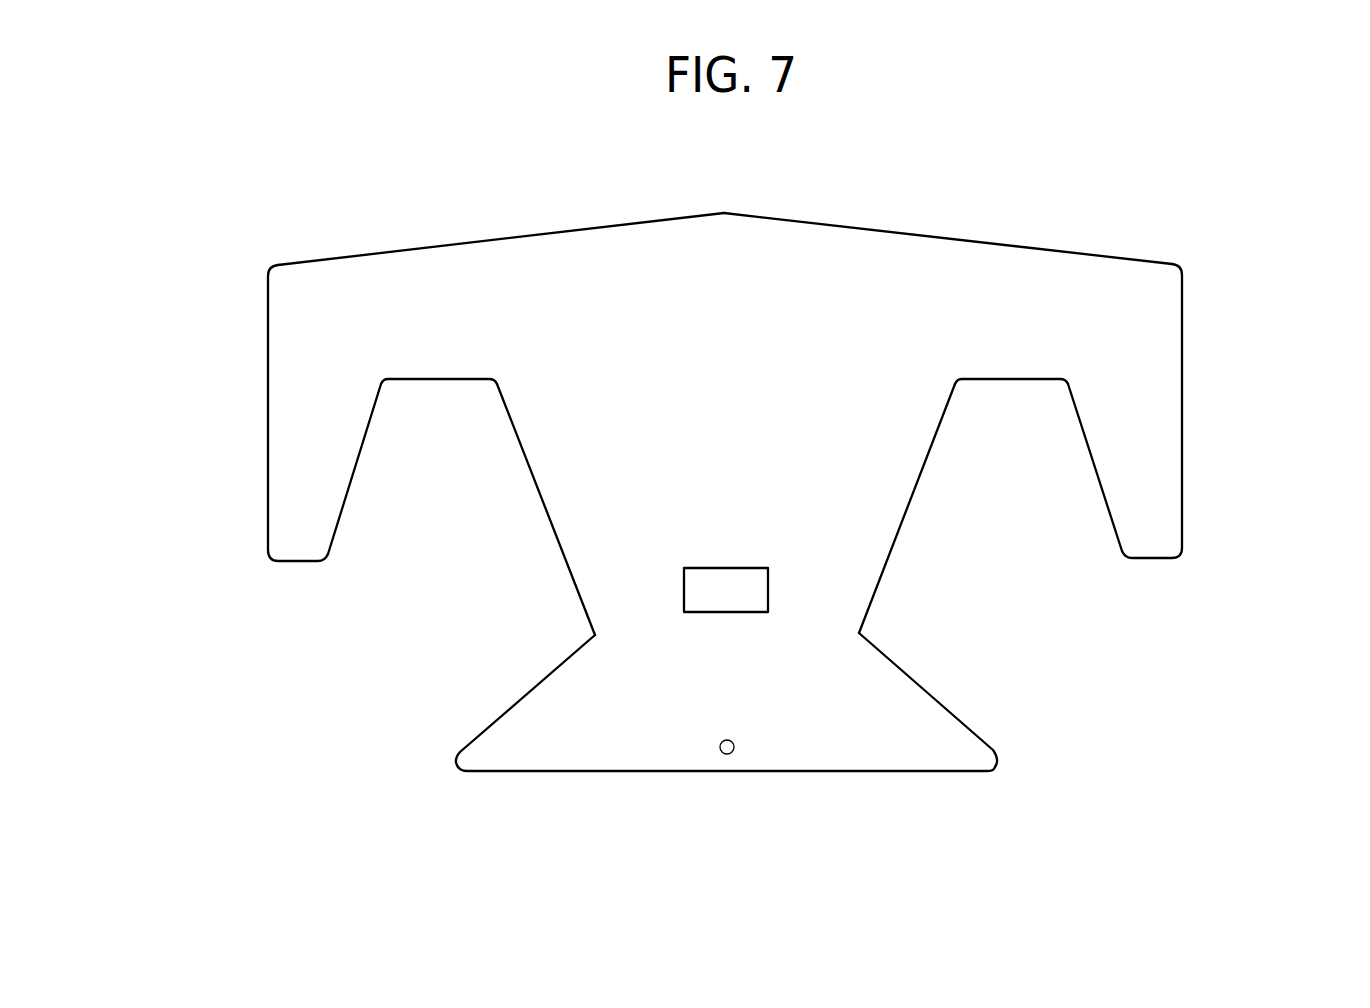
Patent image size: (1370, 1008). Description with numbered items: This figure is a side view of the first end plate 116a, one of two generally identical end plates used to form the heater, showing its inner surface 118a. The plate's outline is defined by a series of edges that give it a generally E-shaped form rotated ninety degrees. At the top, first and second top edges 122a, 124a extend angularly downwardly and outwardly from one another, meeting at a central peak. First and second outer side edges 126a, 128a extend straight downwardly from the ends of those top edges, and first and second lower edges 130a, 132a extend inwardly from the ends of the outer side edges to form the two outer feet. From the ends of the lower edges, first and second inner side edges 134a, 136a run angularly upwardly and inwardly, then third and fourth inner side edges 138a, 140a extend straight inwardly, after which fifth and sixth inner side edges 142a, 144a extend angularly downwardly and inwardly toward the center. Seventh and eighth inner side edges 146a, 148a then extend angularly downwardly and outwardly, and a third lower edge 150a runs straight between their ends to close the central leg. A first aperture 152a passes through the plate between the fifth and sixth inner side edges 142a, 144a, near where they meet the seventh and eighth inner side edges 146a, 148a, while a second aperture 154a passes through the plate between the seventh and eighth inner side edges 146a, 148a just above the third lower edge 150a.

The first end plate 116a is at (862, 189).
The inner surface 118a is at (756, 407).
The first top edge 122a is at (441, 250).
The second top edge 124a is at (990, 242).
The first outer side edge 126a is at (268, 400).
The second outer side edge 128a is at (1186, 354).
The first lower edge 130a is at (298, 563).
The second lower edge 132a is at (1156, 560).
The first inner side edge 134a is at (357, 492).
The second inner side edge 136a is at (1097, 488).
The third inner side edge 138a is at (443, 382).
The fourth inner side edge 140a is at (1011, 381).
The fifth inner side edge 142a is at (543, 517).
The sixth inner side edge 144a is at (917, 492).
The seventh inner side edge 146a is at (510, 705).
The eighth inner side edge 148a is at (930, 690).
The third lower edge 150a is at (597, 772).
The first aperture 152a is at (725, 585).
The second aperture 154a is at (728, 754).